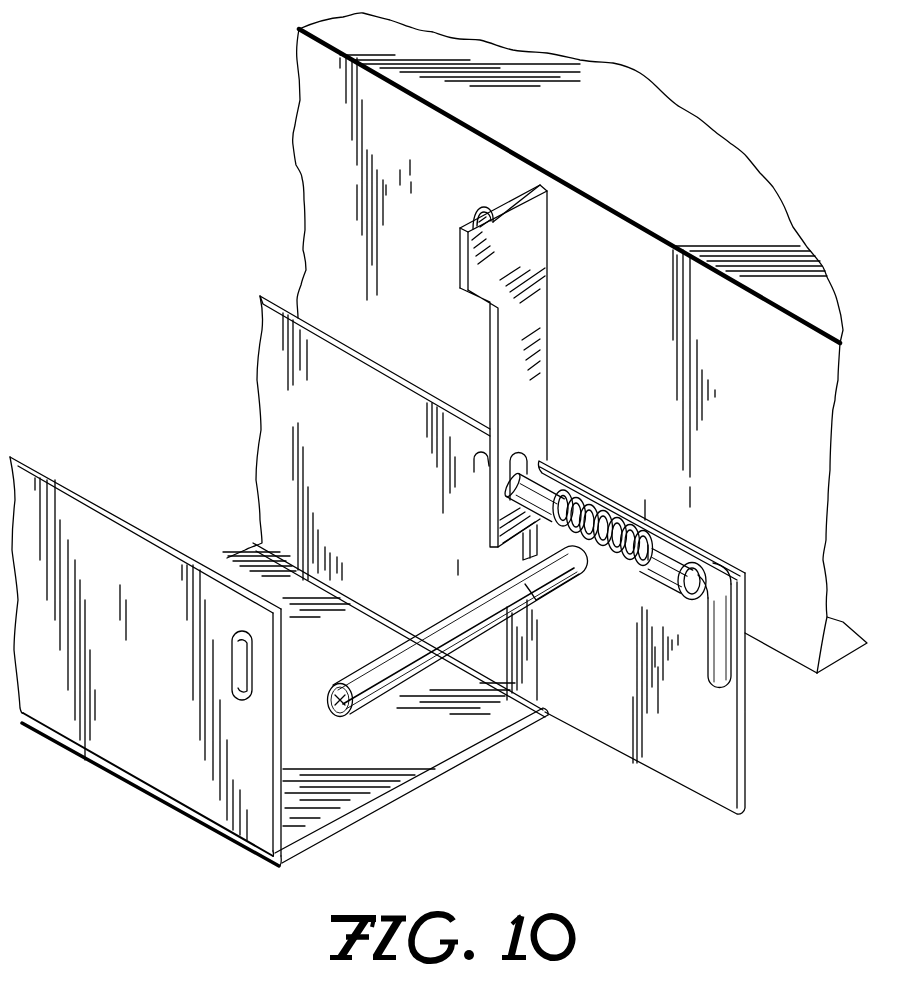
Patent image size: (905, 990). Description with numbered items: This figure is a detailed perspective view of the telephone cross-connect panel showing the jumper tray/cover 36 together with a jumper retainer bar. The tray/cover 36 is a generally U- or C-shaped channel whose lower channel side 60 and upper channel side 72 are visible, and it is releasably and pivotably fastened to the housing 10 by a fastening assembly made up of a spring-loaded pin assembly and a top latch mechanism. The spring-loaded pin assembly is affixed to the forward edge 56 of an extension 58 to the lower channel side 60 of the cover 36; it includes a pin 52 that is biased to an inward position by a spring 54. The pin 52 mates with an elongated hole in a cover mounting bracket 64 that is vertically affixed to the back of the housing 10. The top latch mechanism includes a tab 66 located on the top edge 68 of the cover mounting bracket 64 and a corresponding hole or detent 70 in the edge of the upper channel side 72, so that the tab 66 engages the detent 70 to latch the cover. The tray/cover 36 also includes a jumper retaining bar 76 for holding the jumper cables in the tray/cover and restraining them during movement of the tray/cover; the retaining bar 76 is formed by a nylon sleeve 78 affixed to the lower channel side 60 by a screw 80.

The housing 10 is at (693, 160).
The jumper tray/cover 36 is at (98, 758).
The pin 52 is at (717, 637).
The spring 54 is at (605, 500).
The forward edge 56 is at (725, 558).
The extension 58 is at (707, 767).
The lower channel side 60 is at (432, 568).
The cover mounting bracket 64 is at (528, 387).
The tab 66 is at (477, 214).
The top edge 68 is at (513, 203).
The hole or detent 70 is at (250, 660).
The upper channel side 72 is at (160, 623).
The jumper retaining bar 76 is at (395, 690).
The nylon sleeve 78 is at (537, 600).
The screw 80 is at (333, 716).